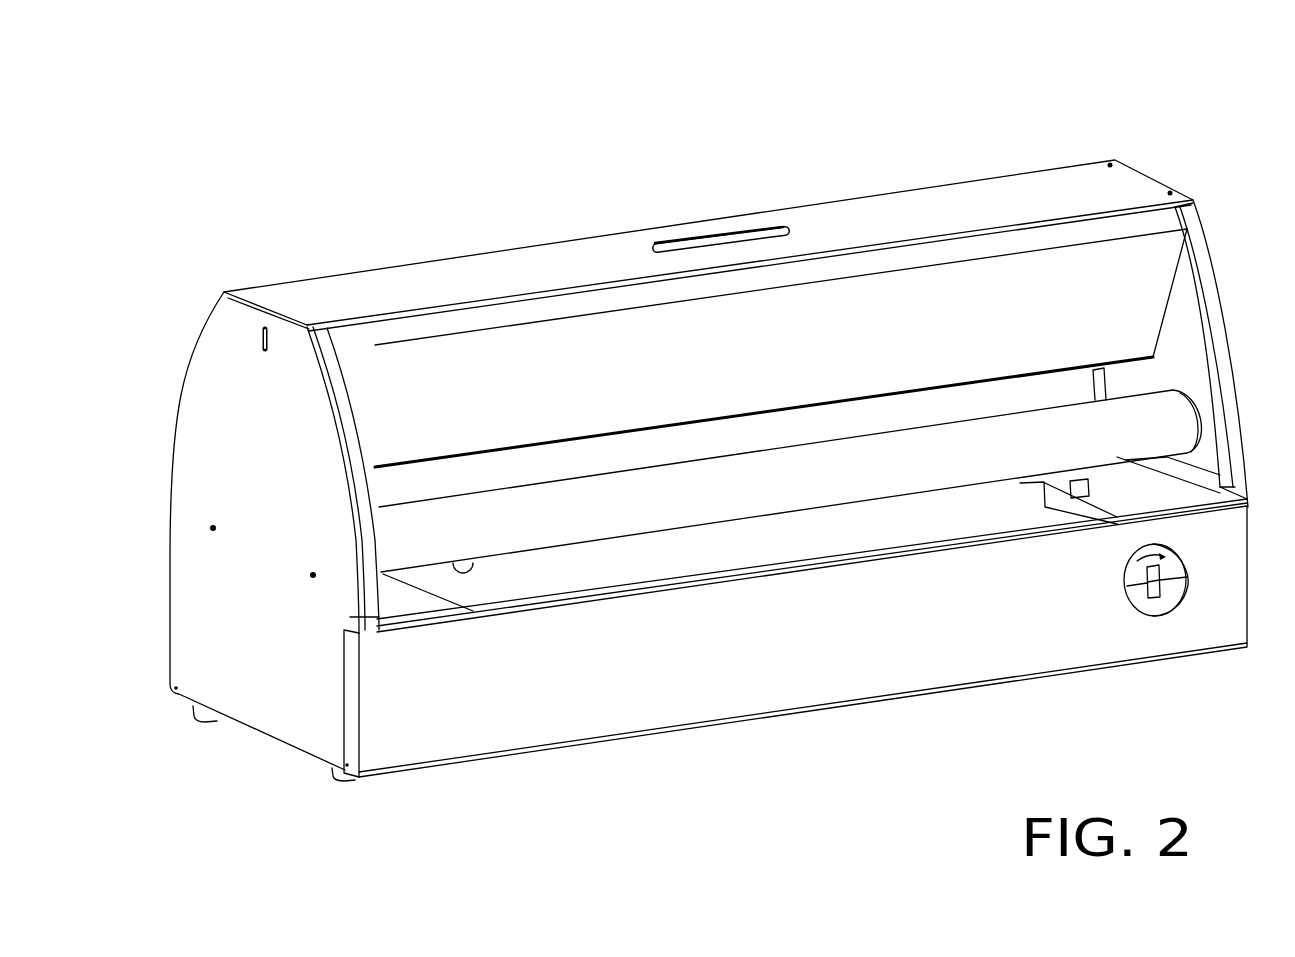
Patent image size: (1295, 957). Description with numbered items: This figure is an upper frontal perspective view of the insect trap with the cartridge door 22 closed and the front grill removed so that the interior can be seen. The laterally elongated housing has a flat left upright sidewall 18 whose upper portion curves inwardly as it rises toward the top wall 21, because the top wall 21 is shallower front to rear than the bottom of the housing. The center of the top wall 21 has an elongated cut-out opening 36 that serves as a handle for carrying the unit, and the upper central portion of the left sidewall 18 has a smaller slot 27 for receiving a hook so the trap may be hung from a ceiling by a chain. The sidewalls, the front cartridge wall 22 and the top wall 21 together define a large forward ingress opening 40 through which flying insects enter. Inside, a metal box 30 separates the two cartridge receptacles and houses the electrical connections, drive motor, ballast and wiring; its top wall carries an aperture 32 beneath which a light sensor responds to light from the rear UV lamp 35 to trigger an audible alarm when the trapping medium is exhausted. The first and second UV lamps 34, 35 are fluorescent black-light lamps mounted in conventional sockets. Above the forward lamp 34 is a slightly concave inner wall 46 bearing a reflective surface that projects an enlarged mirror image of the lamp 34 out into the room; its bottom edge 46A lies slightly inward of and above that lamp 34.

The left upright sidewall 18 is at (223, 678).
The top wall 21 is at (448, 268).
The cartridge door 22 is at (815, 669).
The slot 27 is at (265, 373).
The metal box 30 is at (553, 584).
The aperture 32 is at (454, 548).
The first UV lamp 34 is at (1042, 440).
The second UV lamp 35 is at (972, 393).
The elongated opening 36 is at (783, 208).
The ingress opening 40 is at (896, 312).
The curved inner wall 46 is at (760, 360).
The bottom edge 46A is at (777, 432).